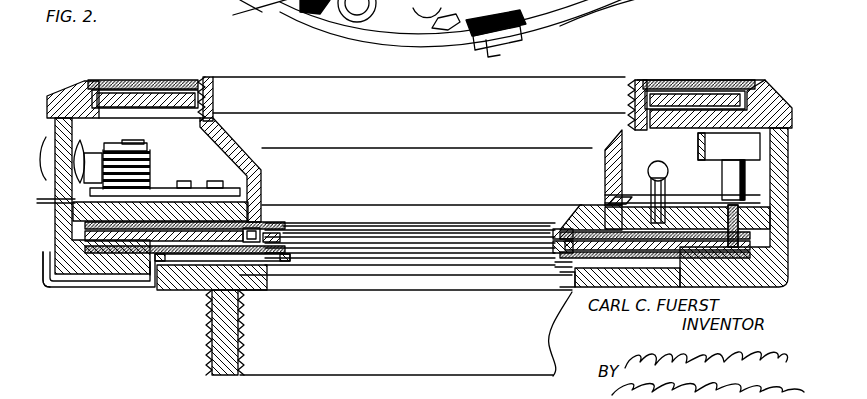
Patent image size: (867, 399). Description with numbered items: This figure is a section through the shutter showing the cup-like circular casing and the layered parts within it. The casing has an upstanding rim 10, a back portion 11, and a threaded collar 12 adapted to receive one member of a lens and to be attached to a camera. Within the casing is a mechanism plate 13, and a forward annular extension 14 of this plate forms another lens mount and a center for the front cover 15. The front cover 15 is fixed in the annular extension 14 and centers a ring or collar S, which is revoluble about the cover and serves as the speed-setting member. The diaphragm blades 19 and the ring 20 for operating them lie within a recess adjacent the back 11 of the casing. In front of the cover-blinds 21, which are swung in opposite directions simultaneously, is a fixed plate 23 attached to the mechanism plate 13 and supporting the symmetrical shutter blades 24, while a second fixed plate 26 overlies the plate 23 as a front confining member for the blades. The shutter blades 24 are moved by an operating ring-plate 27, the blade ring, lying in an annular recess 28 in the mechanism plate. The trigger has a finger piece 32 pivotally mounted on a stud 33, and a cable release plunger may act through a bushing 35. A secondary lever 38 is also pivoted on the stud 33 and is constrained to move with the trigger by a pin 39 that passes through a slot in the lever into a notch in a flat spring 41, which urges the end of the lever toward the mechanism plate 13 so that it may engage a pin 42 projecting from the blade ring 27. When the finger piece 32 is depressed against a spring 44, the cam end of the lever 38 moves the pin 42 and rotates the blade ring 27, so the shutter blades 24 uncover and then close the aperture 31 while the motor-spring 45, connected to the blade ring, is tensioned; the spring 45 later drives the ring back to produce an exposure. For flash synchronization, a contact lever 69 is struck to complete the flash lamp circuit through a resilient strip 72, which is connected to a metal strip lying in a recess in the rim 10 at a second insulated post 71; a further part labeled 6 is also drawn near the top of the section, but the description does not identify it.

The ring 6 is at (370, 38).
The upstanding rim 10 is at (792, 125).
The back portion 11 is at (183, 282).
The threaded collar 12 is at (212, 360).
The mechanism plate 13 is at (598, 210).
The forward annular extension 14 is at (205, 81).
The front cover 15 is at (738, 86).
The diaphragm blades 19 is at (268, 262).
The ring 20 is at (157, 282).
The cover-blinds 21 is at (100, 248).
The fixed plate 23 is at (550, 262).
The shutter blades 24 is at (556, 246).
The second fixed plate 26 is at (560, 226).
The operating ring-plate 27 is at (248, 222).
The annular recess 28 is at (620, 197).
The aperture 31 is at (400, 222).
The finger piece 32 is at (46, 204).
The stud 33 is at (110, 154).
The bushing 35 is at (40, 200).
The secondary lever 38 is at (165, 188).
The pin 39 is at (186, 181).
The flat spring 41 is at (156, 182).
The pin 42 is at (216, 181).
The spring 44 is at (128, 148).
The motor-spring 45 is at (652, 166).
The contact lever 69 is at (248, 13).
The second insulated post 71 is at (520, 50).
The resilient strip 72 is at (432, 30).
The ring or collar S is at (74, 84).